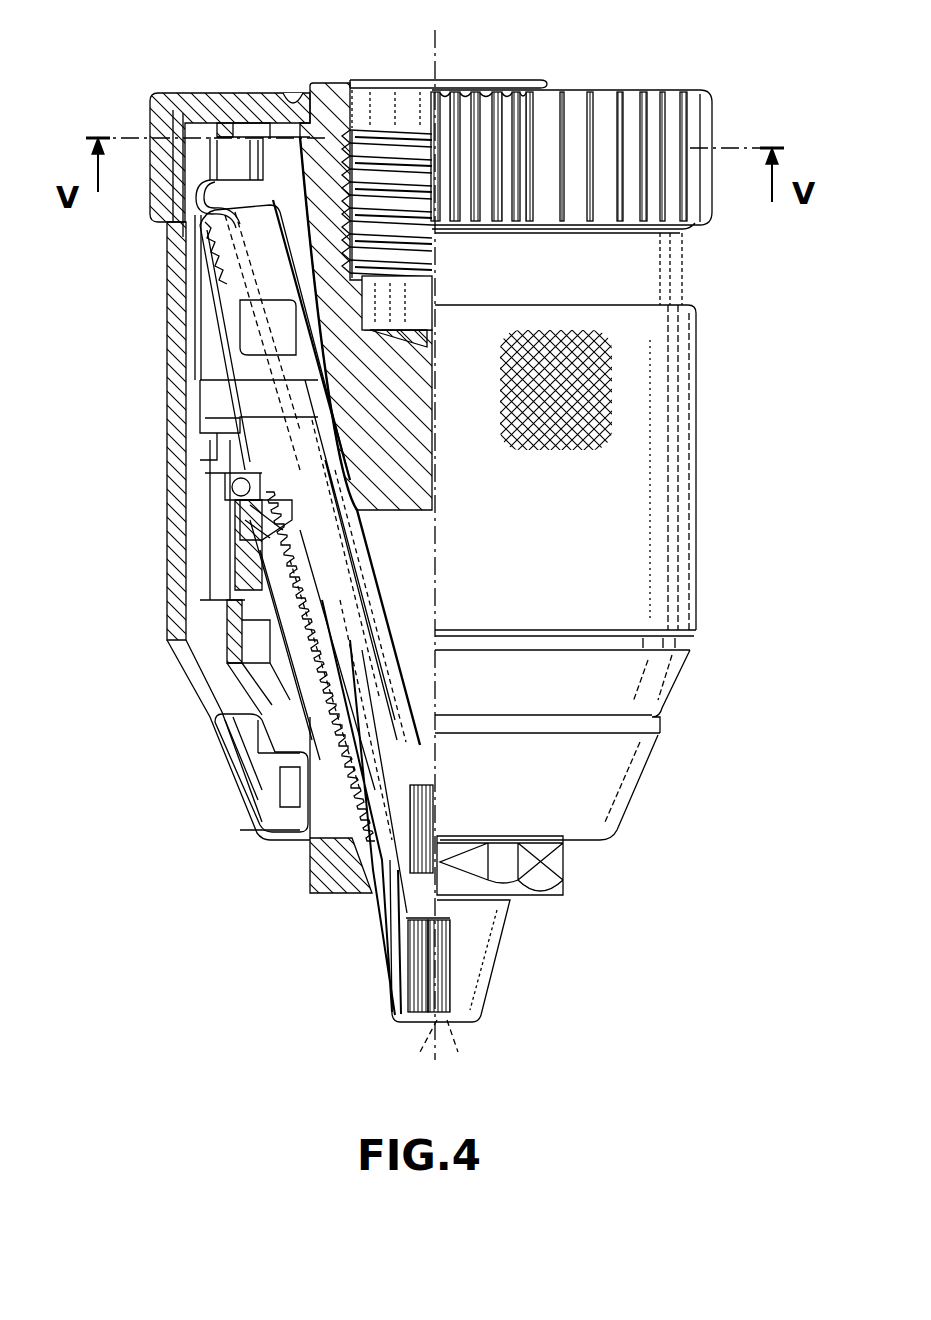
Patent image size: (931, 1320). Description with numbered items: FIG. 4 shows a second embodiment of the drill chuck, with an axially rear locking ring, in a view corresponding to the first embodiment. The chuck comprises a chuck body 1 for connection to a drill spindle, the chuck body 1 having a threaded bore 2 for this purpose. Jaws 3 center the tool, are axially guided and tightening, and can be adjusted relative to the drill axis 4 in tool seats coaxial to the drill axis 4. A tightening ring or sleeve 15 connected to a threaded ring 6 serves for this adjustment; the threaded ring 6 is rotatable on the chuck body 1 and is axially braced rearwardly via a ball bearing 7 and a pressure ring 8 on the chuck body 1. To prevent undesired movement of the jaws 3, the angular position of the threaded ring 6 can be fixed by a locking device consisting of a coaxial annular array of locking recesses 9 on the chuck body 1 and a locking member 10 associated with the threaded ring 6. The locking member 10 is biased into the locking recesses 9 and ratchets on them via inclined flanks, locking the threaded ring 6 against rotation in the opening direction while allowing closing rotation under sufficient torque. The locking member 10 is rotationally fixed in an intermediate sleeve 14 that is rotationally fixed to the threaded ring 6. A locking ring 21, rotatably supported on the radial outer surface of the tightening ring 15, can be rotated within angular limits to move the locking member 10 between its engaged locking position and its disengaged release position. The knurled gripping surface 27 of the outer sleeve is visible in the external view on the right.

The chuck body 1 is at (337, 84).
The threaded bore 2 is at (398, 130).
The jaws 3 is at (380, 937).
The drill axis 4 is at (430, 74).
The threaded ring 6 is at (243, 537).
The ball bearing 7 is at (255, 472).
The pressure ring 8 is at (240, 487).
The locking recesses 9 is at (225, 165).
The locking member 10 is at (220, 135).
The intermediate sleeve 14 is at (197, 413).
The tightening ring 15 is at (170, 377).
The locking ring 21 is at (150, 125).
The grip surface 27 is at (300, 440).